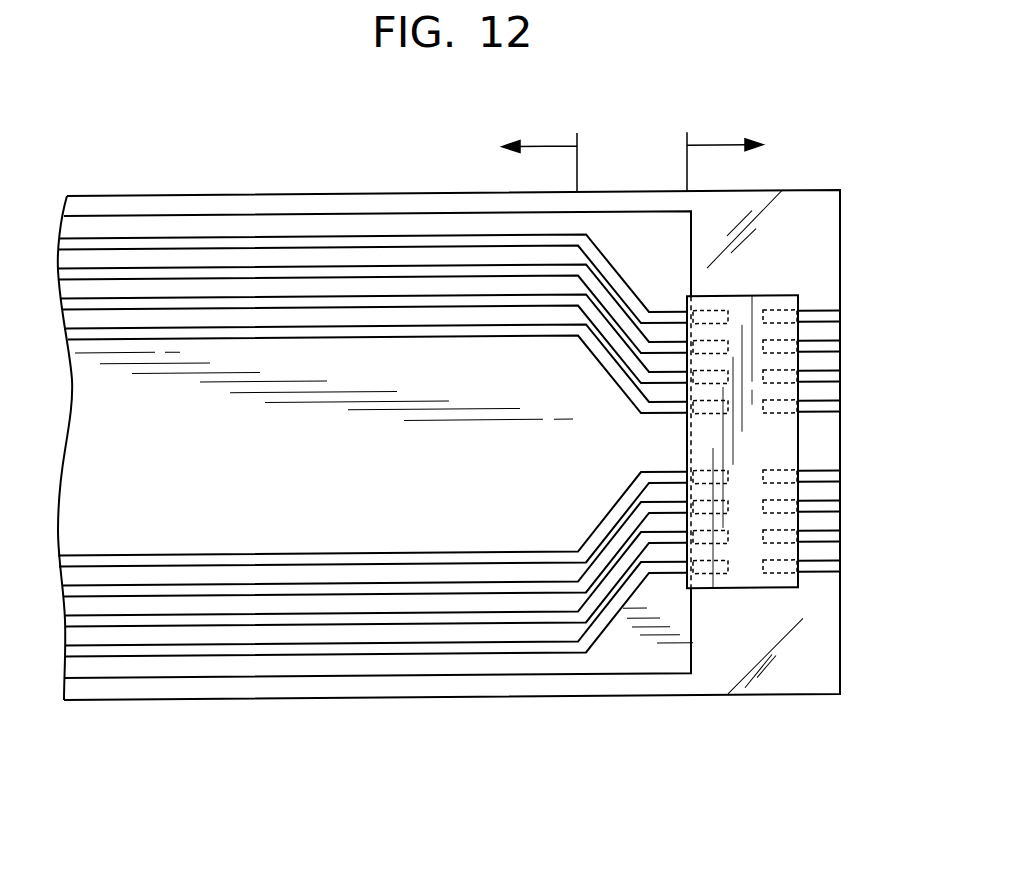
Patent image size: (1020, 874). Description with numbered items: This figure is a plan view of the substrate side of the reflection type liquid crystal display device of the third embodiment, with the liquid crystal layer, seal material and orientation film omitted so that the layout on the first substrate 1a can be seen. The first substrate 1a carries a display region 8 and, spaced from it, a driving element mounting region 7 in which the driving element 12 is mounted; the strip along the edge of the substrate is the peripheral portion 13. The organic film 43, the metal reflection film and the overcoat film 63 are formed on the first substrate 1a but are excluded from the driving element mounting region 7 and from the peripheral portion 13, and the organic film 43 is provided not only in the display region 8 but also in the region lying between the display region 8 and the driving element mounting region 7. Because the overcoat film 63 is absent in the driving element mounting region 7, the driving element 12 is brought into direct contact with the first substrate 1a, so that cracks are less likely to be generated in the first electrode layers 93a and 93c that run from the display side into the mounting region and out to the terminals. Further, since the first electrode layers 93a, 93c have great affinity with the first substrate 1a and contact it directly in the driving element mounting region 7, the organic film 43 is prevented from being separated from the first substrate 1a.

The first substrate 1a is at (817, 662).
The driving element mounting region 7 is at (713, 146).
The display region 8 is at (545, 146).
The driving element 12 is at (756, 272).
The peripheral portion 13 is at (307, 688).
The organic film 43 is at (668, 650).
The overcoat film 63 is at (177, 668).
The first electrode layer 93a is at (615, 283).
The first electrode layer 93c is at (833, 408).